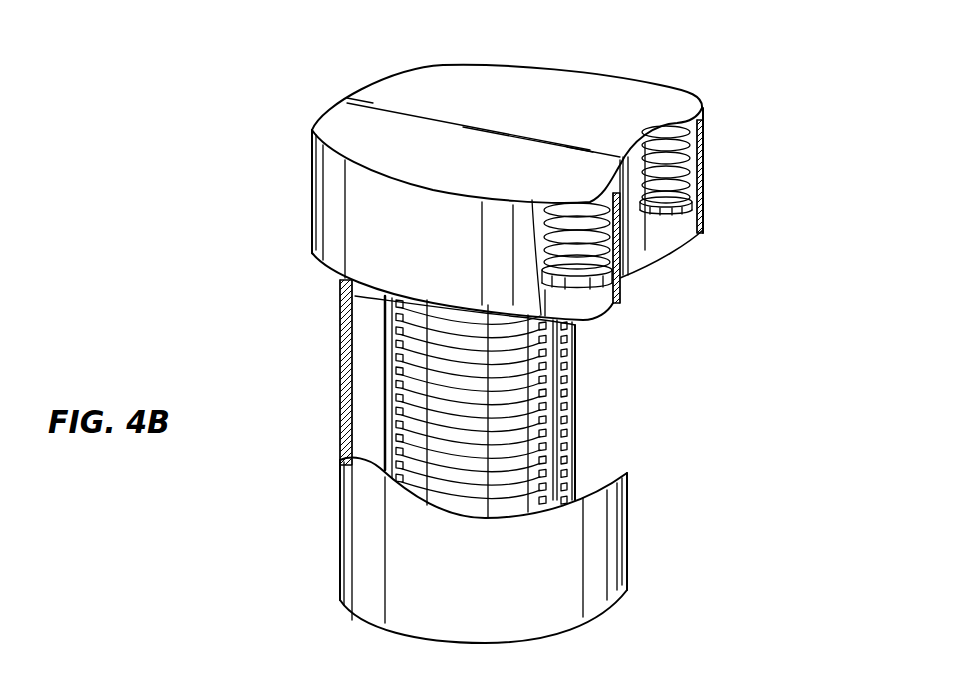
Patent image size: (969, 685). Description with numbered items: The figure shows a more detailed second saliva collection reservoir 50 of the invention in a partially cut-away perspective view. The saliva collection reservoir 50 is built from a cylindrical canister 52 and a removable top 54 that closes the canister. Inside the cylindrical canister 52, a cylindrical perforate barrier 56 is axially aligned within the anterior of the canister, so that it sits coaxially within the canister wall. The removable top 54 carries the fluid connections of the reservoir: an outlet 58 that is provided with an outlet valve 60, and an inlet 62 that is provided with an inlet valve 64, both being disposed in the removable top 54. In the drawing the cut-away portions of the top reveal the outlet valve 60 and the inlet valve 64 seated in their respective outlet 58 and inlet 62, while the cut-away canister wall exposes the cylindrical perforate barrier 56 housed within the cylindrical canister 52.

The saliva collection reservoir 50 is at (342, 52).
The cylindrical canister 52 is at (600, 542).
The removable top 54 is at (592, 93).
The cylindrical perforate barrier 56 is at (407, 420).
The outlet 58 is at (677, 222).
The outlet valve 60 is at (656, 145).
The inlet 62 is at (588, 299).
The inlet valve 64 is at (603, 242).